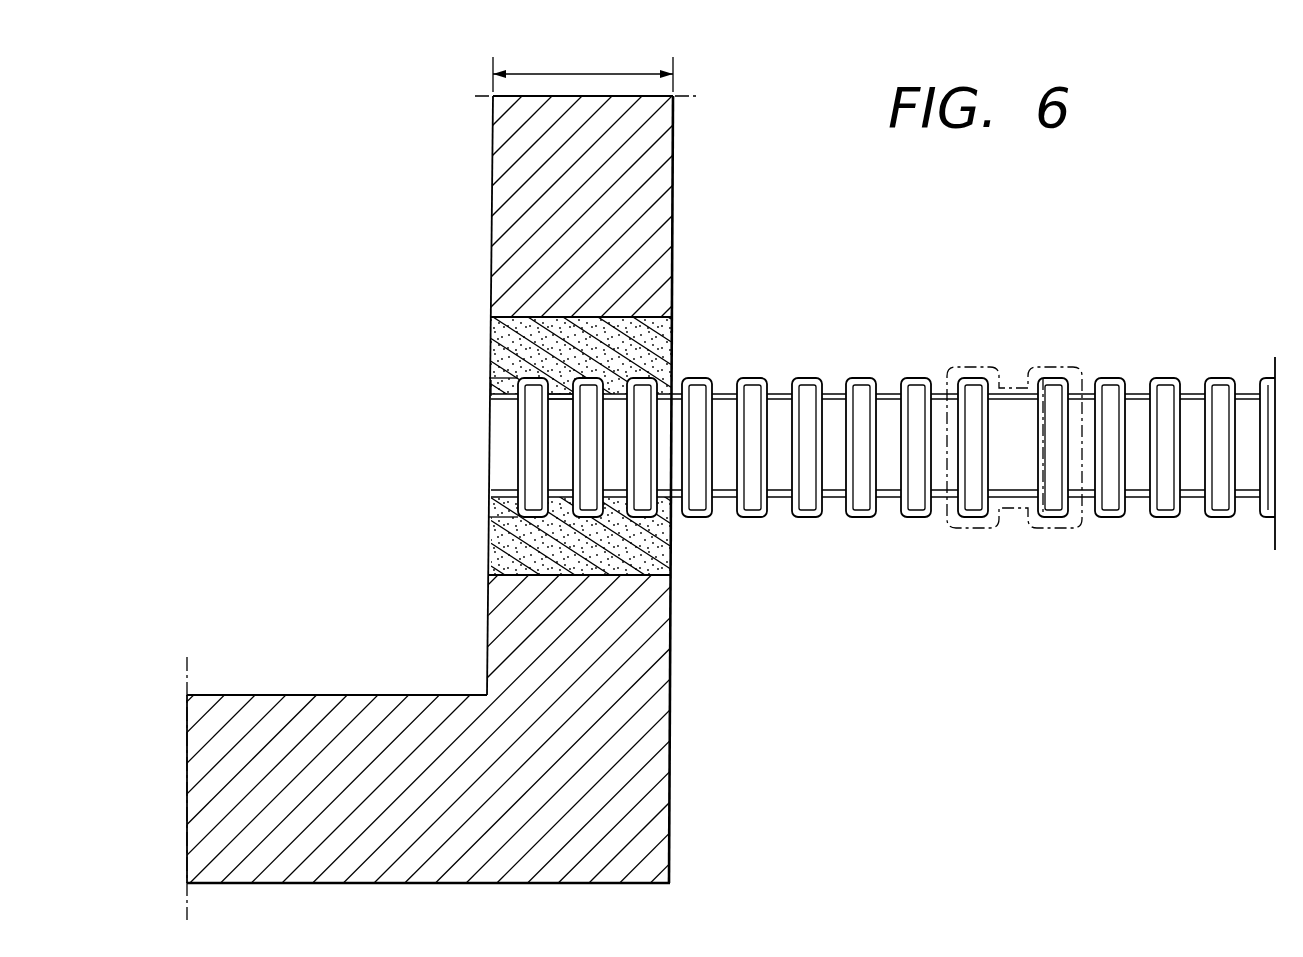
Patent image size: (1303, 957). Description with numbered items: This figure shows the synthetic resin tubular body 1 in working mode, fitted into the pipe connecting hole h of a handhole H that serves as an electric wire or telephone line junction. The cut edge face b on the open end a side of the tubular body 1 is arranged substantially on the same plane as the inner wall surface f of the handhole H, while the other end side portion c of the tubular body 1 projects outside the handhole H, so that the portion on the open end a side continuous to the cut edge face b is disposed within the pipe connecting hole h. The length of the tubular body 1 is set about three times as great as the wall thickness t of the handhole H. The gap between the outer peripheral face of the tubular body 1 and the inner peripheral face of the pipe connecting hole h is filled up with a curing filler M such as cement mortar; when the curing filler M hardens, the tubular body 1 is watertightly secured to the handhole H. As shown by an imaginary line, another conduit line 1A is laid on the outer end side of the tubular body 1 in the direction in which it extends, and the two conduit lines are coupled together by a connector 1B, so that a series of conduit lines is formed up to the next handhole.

The tubular body 1 is at (883, 438).
The conduit line 1A is at (1165, 388).
The connector 1B is at (1053, 373).
The handhole H is at (477, 211).
The pipe connecting hole h is at (490, 348).
The curing filler M is at (672, 352).
The cut edge face b is at (490, 398).
The open end a is at (613, 463).
The other end side portion c is at (863, 492).
The inner wall surface f is at (486, 632).
The wall thickness t is at (583, 69).